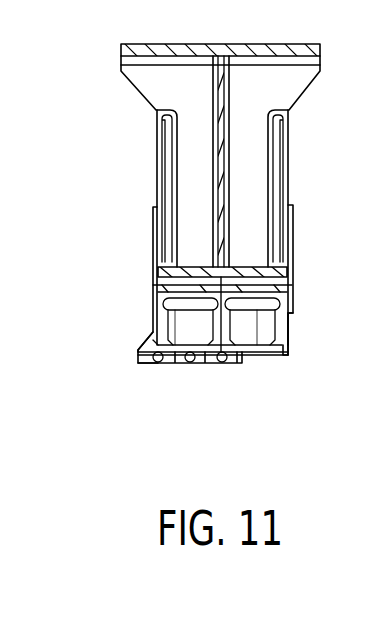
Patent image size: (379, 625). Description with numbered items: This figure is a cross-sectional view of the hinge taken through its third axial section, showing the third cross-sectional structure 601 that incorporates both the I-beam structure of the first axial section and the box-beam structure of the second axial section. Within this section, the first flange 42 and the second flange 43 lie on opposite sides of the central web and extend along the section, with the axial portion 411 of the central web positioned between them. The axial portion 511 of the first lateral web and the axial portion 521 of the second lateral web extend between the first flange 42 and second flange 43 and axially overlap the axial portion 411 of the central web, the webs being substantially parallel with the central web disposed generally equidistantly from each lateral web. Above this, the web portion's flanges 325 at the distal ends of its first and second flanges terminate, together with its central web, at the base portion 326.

The base portion 326 is at (121, 52).
The flanges 325 is at (143, 87).
The third cross-sectional structure 601 is at (194, 156).
The first flange 42 is at (153, 285).
The axial portion of the second lateral web 521 is at (289, 323).
The axial portion of the first lateral web 511 is at (148, 340).
The axial portion of the central web 411 is at (222, 320).
The second flange 43 is at (237, 355).